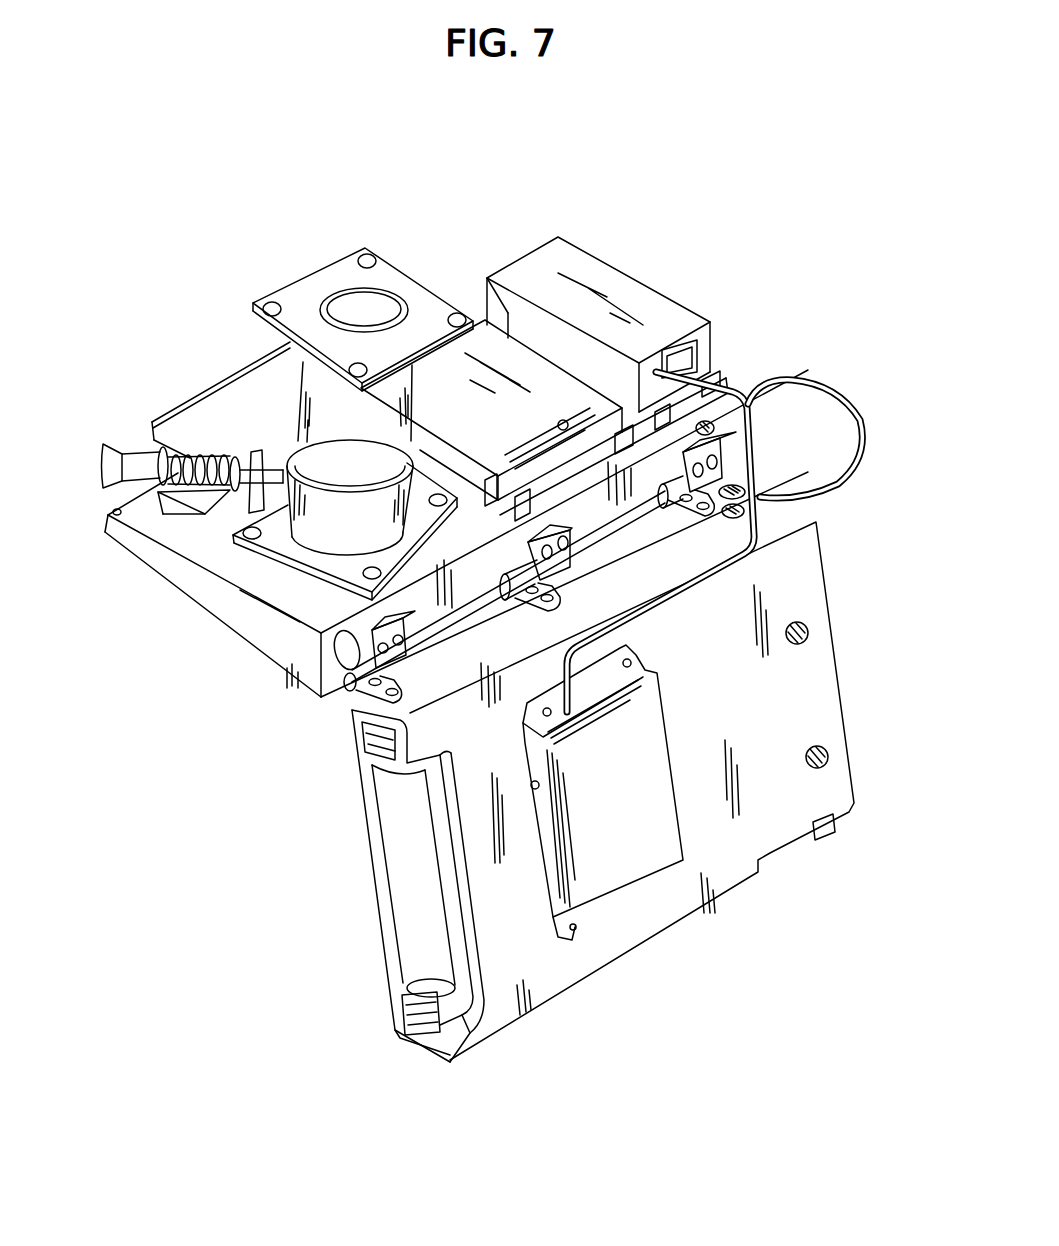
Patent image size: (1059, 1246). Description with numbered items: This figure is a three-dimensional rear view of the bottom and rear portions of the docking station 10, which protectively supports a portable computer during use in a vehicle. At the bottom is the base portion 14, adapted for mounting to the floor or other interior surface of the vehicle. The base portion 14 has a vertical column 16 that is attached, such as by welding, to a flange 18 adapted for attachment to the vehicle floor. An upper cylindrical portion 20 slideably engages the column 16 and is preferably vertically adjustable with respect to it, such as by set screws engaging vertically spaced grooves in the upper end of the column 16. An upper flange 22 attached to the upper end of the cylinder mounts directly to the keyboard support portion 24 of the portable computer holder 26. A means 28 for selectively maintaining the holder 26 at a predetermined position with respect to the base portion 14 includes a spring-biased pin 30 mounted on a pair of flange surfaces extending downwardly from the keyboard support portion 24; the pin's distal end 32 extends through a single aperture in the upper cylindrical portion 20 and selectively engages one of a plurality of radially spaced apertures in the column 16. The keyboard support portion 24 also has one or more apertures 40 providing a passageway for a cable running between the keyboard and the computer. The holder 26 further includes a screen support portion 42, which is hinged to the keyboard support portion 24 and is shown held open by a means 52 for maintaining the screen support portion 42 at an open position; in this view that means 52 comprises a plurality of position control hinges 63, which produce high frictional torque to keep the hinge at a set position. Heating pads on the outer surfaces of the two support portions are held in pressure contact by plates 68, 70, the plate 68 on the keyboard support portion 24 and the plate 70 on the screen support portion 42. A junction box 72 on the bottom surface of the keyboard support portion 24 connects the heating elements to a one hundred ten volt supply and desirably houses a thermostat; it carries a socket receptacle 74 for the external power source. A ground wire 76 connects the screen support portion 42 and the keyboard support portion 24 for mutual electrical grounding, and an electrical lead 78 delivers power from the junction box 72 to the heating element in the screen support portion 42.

The docking station 10 is at (735, 178).
The base portion 14 is at (440, 240).
The vertical column 16 is at (342, 433).
The flange 18 is at (387, 280).
The upper cylindrical portion 20 is at (340, 521).
The upper flange 22 is at (303, 607).
The keyboard support portion 24 is at (302, 609).
The portable computer holder 26 is at (320, 805).
The means for selectively maintaining the holder 28 is at (137, 437).
The spring-biased pin 30 is at (147, 470).
The distal end 32 is at (281, 477).
The apertures 40 is at (320, 682).
The screen support portion 42 is at (767, 782).
The means for maintaining the screen support portion at an open position 52 is at (322, 722).
The position control hinges 63 is at (757, 498).
The plate 68 is at (470, 393).
The plate 70 is at (618, 838).
The junction box 72 is at (585, 262).
The socket receptacle 74 is at (697, 357).
The ground wire 76 is at (840, 402).
The electrical lead 78 is at (752, 550).